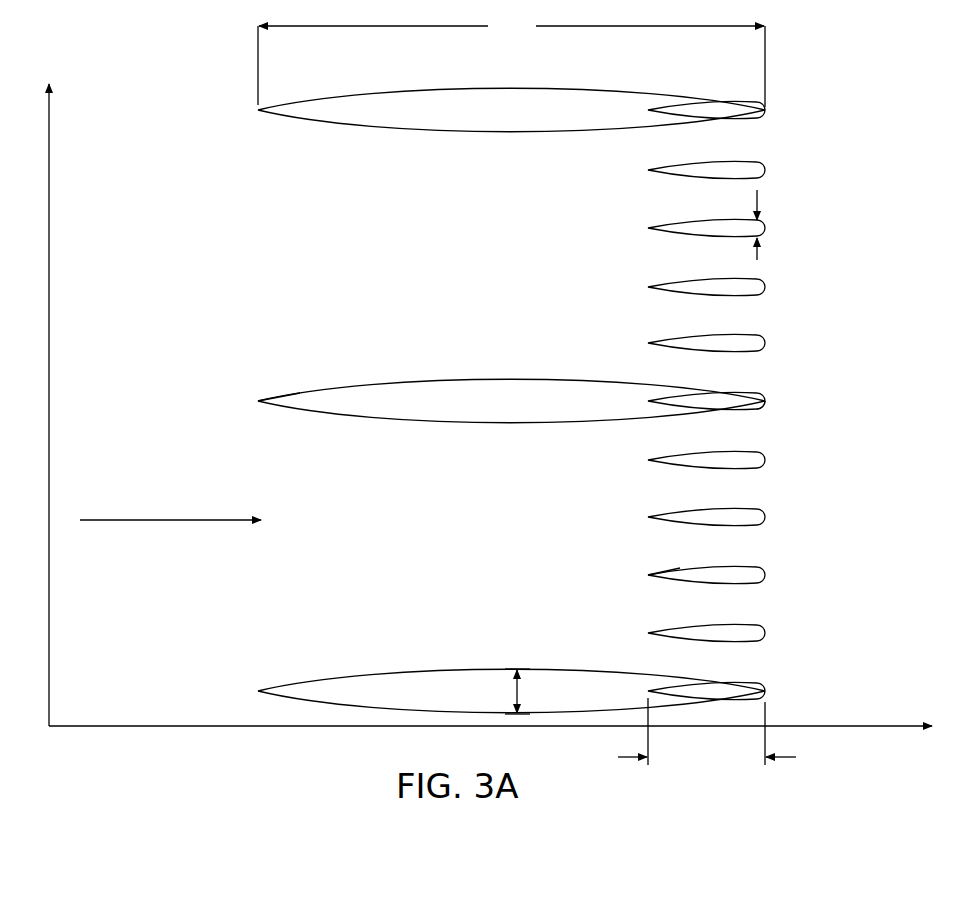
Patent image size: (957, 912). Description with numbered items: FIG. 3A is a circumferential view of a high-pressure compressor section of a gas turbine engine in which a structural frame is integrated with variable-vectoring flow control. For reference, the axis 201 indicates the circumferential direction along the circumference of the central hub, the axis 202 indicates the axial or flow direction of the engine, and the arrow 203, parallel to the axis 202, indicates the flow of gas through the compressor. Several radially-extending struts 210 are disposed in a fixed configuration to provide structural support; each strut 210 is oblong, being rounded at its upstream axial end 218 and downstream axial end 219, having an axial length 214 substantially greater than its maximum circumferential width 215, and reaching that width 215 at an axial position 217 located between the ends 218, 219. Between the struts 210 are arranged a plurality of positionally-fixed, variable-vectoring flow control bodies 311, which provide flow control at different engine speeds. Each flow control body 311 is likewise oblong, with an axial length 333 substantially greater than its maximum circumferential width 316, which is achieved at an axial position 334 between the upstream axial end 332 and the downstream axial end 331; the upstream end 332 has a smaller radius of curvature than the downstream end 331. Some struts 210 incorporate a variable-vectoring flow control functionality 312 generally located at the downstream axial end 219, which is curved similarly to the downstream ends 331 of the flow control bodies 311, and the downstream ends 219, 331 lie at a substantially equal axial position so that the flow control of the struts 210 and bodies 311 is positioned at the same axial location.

The axis 201 is at (49, 128).
The axis 202 is at (900, 726).
The arrow 203 is at (234, 520).
The strut 210 is at (624, 90).
The axial length 214 is at (511, 61).
The maximum circumferential width 215 is at (516, 691).
The axial position 217 is at (517, 669).
The upstream axial end 218 is at (257, 401).
The downstream axial end 219 is at (768, 402).
The positionally-fixed, variable-vectoring flow control body 311 is at (768, 170).
The positionally-fixed, variable-vectoring flow control functionality 312 is at (768, 110).
The maximum circumferential width 316 is at (758, 258).
The downstream axial end 331 is at (768, 575).
The upstream axial end 332 is at (647, 575).
The axial length 333 is at (786, 757).
The axial position 334 is at (757, 216).